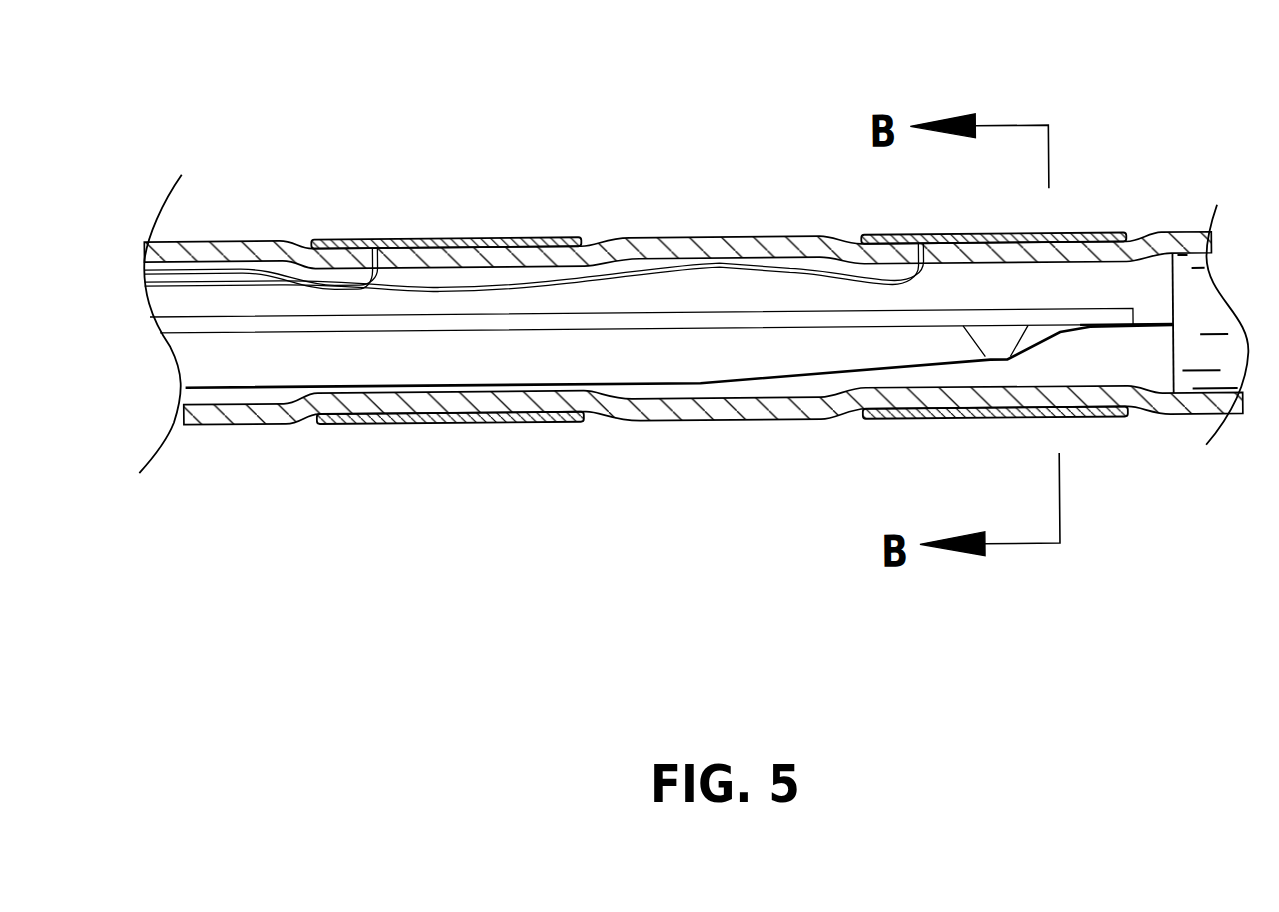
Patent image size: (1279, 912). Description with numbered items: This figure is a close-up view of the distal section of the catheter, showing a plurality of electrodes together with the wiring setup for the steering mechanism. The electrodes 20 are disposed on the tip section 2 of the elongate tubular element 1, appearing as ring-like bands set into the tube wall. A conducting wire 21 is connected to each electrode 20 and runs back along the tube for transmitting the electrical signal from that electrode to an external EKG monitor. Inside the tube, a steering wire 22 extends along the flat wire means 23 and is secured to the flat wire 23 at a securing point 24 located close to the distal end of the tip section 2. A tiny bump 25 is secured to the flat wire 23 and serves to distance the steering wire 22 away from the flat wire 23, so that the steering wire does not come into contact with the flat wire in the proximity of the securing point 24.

The elongate tubular element 1 is at (218, 236).
The tip section 2 is at (800, 39).
The electrodes 20 is at (488, 233).
The conducting wire 21 is at (287, 269).
The steering wire 22 is at (728, 390).
The flat wire means 23 is at (638, 309).
The securing point 24 is at (1118, 343).
The tiny bump 25 is at (993, 349).